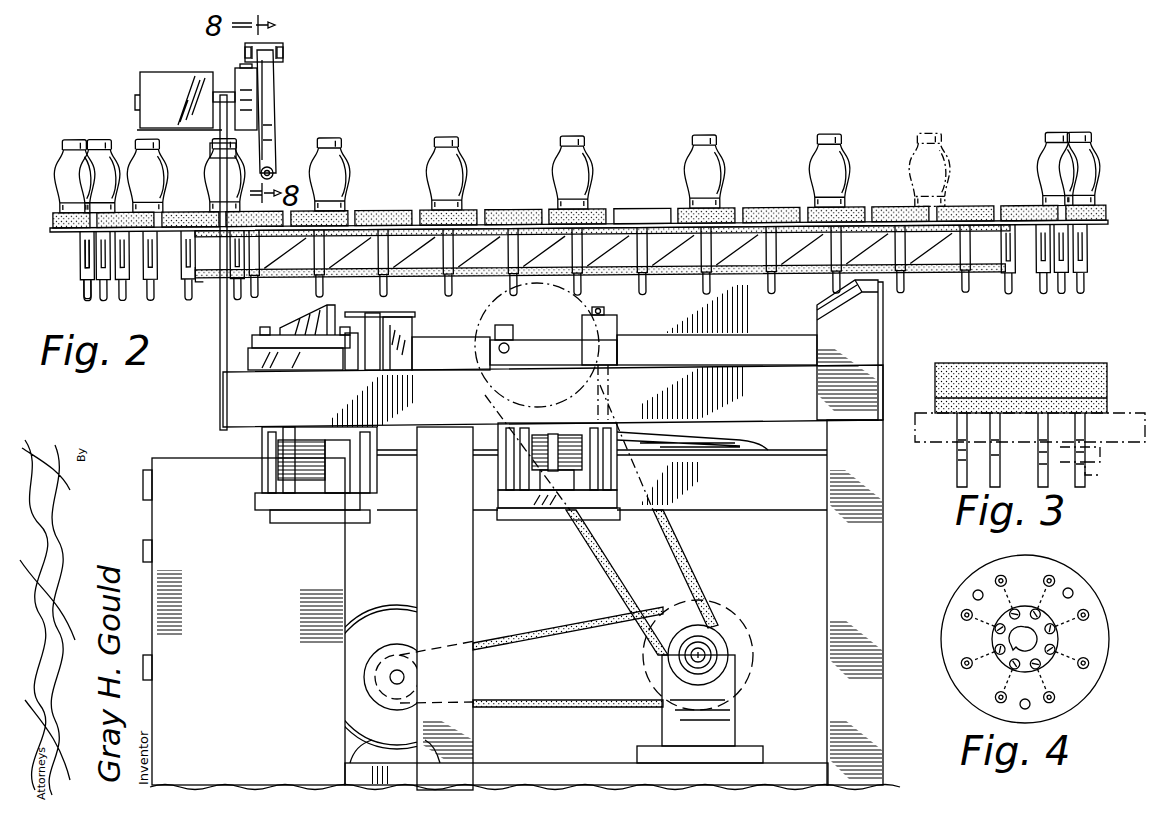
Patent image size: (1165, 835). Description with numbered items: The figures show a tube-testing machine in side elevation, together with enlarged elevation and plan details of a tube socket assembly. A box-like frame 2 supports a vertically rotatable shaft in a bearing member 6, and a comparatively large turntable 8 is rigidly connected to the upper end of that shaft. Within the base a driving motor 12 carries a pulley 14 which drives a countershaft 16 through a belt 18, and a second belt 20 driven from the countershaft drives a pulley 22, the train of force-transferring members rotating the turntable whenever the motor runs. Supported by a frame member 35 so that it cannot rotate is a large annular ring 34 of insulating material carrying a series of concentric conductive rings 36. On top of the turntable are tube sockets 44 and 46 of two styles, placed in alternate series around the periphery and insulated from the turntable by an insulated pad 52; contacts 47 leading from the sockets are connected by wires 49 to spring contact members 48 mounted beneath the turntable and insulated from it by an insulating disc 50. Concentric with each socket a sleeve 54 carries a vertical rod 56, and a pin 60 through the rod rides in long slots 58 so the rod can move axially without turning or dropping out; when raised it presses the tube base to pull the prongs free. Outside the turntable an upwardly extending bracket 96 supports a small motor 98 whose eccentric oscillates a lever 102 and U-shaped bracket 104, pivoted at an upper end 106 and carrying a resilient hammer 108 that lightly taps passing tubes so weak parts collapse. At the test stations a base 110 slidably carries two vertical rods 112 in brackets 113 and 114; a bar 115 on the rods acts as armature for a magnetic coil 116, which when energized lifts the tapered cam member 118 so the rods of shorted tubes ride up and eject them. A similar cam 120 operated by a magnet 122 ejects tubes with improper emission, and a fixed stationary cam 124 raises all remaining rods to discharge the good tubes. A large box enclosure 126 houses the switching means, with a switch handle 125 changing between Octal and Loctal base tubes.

In FIG. 2, the box-like frame 2 is at (872, 550).
In FIG. 2, the bearing member 6 is at (750, 440).
In FIG. 2, the turntable 8 is at (1095, 232).
In FIG. 3, the turntable 8 is at (1125, 420).
In FIG. 2, the driving motor 12 is at (393, 615).
In FIG. 2, the pulley 14 is at (370, 675).
In FIG. 2, the countershaft 16 is at (705, 655).
In FIG. 2, the belt 18 is at (598, 628).
In FIG. 2, the second belt 20 is at (680, 560).
In FIG. 2, the pulley 22 is at (417, 341).
In FIG. 2, the annular ring 34 is at (203, 283).
In FIG. 2, the frame member 35 is at (705, 320).
In FIG. 2, the conductive rings 36 is at (462, 278).
In FIG. 2, the tube socket 44 is at (595, 210).
In FIG. 2, the tube socket 46 is at (640, 213).
In FIG. 3, the contacts 47 is at (957, 445).
In FIG. 4, the contacts 47 is at (995, 583).
In FIG. 2, the spring contact members 48 is at (405, 240).
In FIG. 3, the wires 49 is at (1100, 468).
In FIG. 2, the insulating disc 50 is at (745, 236).
In FIG. 2, the insulated pad 52 is at (497, 213).
In FIG. 3, the insulated pad 52 is at (1100, 372).
In FIG. 4, the insulated pad 52 is at (1095, 620).
In FIG. 2, the sleeve 54 is at (80, 240).
In FIG. 2, the vertical rod 56 is at (85, 293).
In FIG. 2, the slots 58 is at (98, 252).
In FIG. 2, the pin 60 is at (87, 272).
In FIG. 2, the bracket 96 is at (220, 343).
In FIG. 2, the small motor 98 is at (170, 72).
In FIG. 2, the lever 102 is at (270, 135).
In FIG. 2, the U-shaped bracket 104 is at (268, 88).
In FIG. 2, the upper end 106 is at (265, 50).
In FIG. 2, the resilient hammer 108 is at (270, 170).
In FIG. 2, the base 110 is at (278, 515).
In FIG. 2, the vertical rods 112 is at (268, 445).
In FIG. 2, the bracket 113 is at (248, 358).
In FIG. 2, the bracket 114 is at (325, 430).
In FIG. 2, the bar 115 is at (272, 498).
In FIG. 2, the magnetic coil 116 is at (278, 460).
In FIG. 2, the cam member 118 is at (280, 326).
In FIG. 2, the cam 120 is at (565, 318).
In FIG. 2, the magnet 122 is at (555, 445).
In FIG. 2, the fixed stationary cam 124 is at (870, 300).
In FIG. 2, the switch handle 125 is at (143, 482).
In FIG. 2, the box enclosure 126 is at (175, 462).